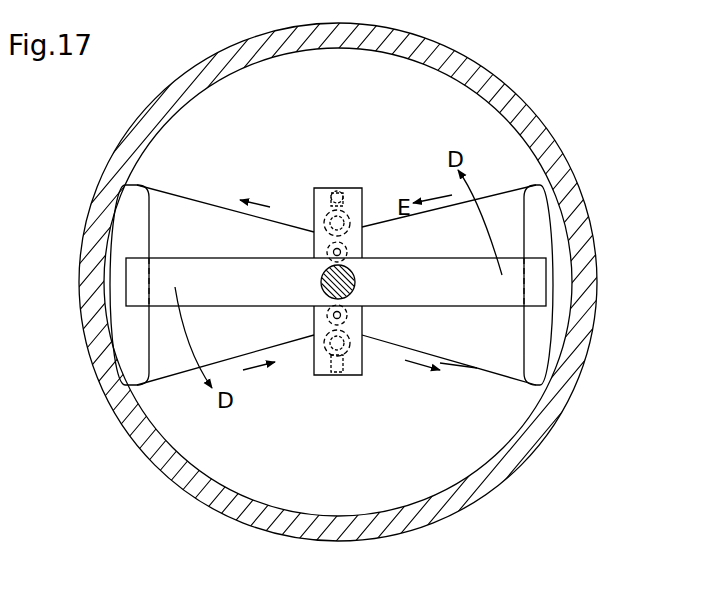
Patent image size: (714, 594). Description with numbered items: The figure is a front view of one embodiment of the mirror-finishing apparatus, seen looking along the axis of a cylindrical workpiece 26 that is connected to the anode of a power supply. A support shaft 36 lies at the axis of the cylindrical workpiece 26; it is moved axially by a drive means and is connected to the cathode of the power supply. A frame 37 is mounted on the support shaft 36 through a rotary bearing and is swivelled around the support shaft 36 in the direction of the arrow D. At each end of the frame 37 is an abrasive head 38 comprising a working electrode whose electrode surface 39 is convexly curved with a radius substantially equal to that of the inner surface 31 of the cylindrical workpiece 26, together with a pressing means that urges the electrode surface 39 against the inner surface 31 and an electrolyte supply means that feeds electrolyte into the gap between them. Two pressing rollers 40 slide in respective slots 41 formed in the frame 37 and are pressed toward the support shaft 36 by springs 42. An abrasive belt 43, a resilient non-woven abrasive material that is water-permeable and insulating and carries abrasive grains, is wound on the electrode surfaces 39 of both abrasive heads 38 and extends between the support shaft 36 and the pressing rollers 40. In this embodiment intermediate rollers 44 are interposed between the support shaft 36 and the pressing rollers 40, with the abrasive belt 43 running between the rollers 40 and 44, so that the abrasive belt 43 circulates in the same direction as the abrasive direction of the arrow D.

The cylindrical workpiece 26 is at (505, 85).
The inner surface 31 is at (333, 518).
The support shaft 36 is at (322, 276).
The frame 37 is at (210, 268).
The abrasive head 38 is at (130, 220).
The electrode surface 39 is at (100, 290).
The pressing roller 40 is at (352, 222).
The slot 41 is at (324, 224).
The spring 42 is at (343, 200).
The abrasive belt 43 is at (477, 368).
The intermediate roller 44 is at (348, 252).